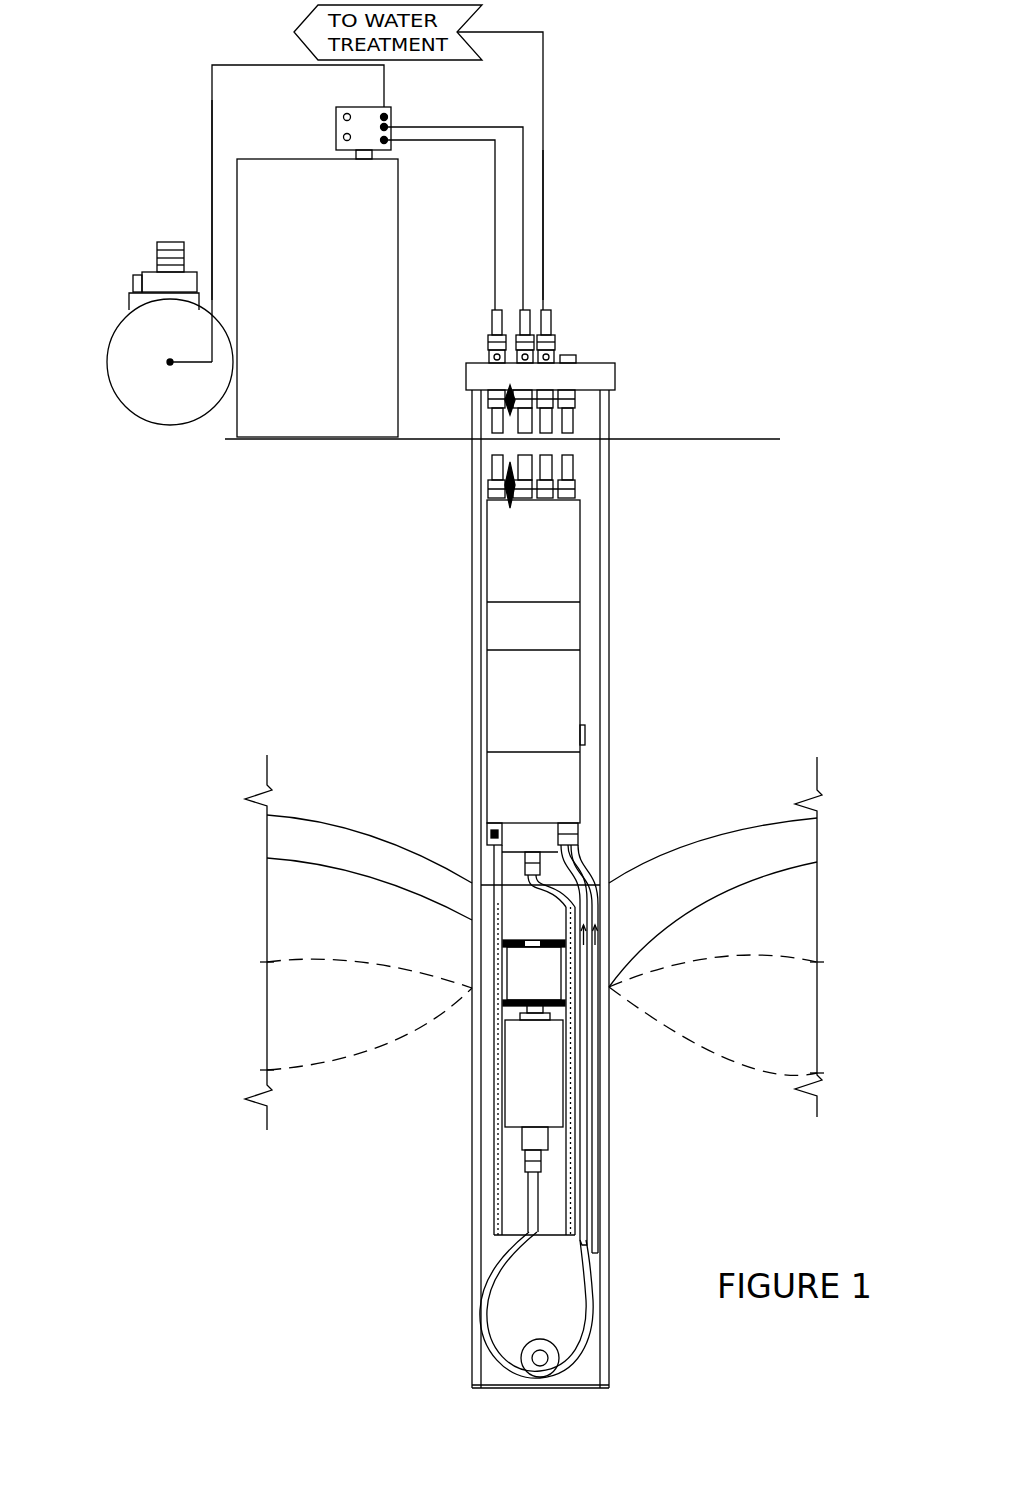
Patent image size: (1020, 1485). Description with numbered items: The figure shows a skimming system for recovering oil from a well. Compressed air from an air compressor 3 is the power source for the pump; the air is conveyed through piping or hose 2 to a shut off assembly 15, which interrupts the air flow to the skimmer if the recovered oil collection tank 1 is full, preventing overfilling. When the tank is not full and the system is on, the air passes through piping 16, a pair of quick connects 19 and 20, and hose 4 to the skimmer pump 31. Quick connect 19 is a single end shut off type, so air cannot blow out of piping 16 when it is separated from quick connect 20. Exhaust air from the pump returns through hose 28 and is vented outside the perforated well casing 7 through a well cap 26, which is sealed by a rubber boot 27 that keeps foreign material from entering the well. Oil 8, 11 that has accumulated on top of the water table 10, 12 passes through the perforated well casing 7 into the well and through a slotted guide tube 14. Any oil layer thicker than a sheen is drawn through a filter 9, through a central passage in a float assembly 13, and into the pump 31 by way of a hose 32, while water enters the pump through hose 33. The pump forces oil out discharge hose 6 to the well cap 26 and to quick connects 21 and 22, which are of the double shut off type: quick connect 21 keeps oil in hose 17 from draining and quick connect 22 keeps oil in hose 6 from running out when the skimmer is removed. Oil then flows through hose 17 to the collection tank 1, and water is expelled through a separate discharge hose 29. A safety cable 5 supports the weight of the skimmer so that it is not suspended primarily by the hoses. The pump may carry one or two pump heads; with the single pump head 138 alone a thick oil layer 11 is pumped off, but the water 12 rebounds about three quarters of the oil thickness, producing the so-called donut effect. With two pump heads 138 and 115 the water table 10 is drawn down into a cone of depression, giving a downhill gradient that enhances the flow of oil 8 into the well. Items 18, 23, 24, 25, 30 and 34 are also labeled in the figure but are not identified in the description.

The recovered oil collection tank 1 is at (237, 182).
The piping or hose 2 is at (212, 233).
The air compressor 3 is at (115, 323).
The hose 4 is at (495, 420).
The safety cable 5 is at (512, 423).
The discharge hose 6 is at (492, 440).
The well casing 7 is at (473, 493).
The oil 8 is at (403, 840).
The filter 9 is at (515, 940).
The water table 10 is at (473, 988).
The oil layer 11 is at (387, 962).
The water 12 is at (422, 1030).
The float assembly 13 is at (530, 1093).
The slotted guide tube 14 is at (495, 1135).
The shut off assembly 15 is at (391, 107).
The piping 16 is at (495, 162).
The hose 17 is at (525, 182).
The discharge pipe 18 is at (543, 203).
The quick connect 19 is at (522, 330).
The quick connect 20 is at (535, 338).
The quick connect 21 is at (548, 345).
The quick connect 22 is at (556, 355).
The coupling 23 is at (560, 340).
The coupling 24 is at (568, 350).
The well cap 25 is at (613, 393).
The well cap 26 is at (612, 417).
The rubber boot 27 is at (570, 440).
The hose 28 is at (548, 468).
The discharge hose 29 is at (548, 488).
The ground level 30 is at (683, 440).
The pump 31 is at (580, 523).
The hose 32 is at (587, 1073).
The hose 33 is at (597, 1112).
The tubing coil 34 is at (547, 1333).
The pump head 115 is at (582, 677).
The pump head 138 is at (582, 774).